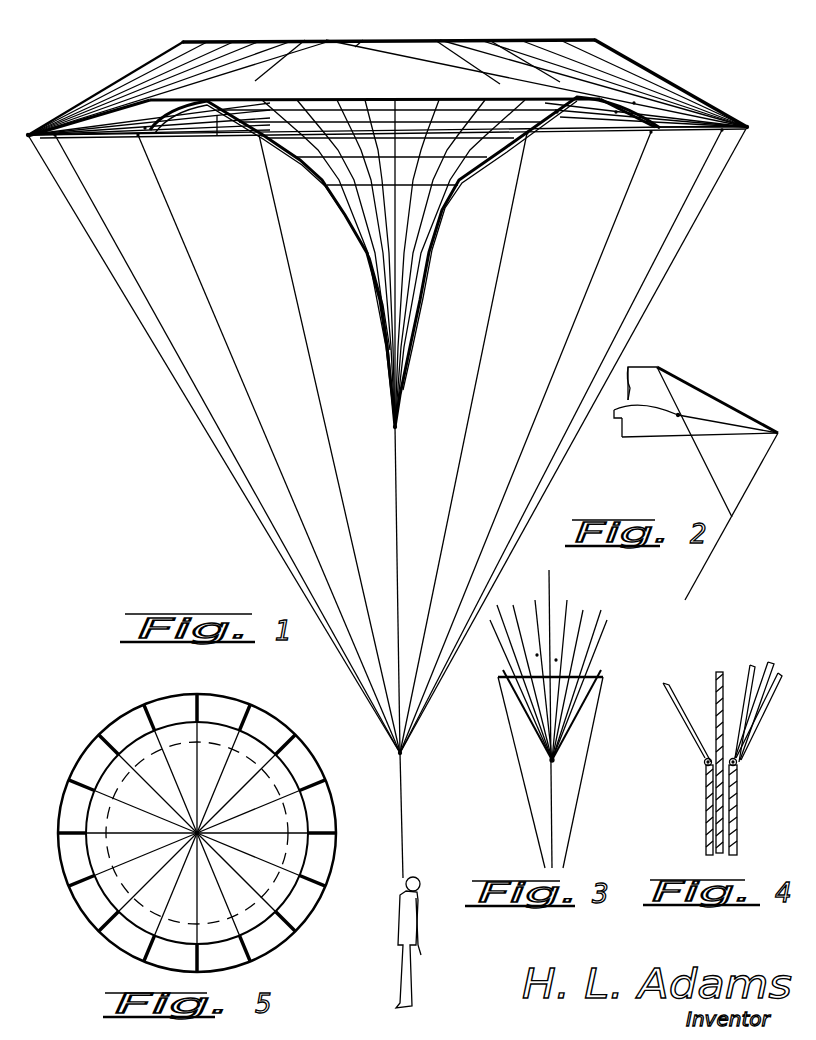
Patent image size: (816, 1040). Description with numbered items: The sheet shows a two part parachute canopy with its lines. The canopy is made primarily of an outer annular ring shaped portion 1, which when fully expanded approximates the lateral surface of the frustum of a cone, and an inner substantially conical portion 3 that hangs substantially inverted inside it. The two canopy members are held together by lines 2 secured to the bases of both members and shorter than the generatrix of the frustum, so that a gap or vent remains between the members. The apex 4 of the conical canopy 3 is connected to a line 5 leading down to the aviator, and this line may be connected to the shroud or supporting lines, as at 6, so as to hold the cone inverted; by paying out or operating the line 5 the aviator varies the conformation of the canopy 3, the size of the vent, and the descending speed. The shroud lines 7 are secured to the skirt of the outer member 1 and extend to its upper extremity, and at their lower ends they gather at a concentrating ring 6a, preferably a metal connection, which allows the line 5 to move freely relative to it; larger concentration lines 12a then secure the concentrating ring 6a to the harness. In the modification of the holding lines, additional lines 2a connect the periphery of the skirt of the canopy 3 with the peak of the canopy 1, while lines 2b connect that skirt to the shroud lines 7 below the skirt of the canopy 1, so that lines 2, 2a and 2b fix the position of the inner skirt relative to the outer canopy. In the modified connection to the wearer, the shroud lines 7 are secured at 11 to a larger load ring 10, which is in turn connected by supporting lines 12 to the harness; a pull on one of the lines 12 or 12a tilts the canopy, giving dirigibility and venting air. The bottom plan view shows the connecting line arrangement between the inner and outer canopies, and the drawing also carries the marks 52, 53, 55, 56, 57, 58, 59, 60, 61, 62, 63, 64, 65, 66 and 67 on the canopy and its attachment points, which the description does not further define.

In FIG. 1, the outer annular ring shaped portion 1 is at (619, 50).
In FIG. 2, the outer annular ring shaped portion 1 is at (715, 396).
In FIG. 5, the outer annular ring shaped portion 1 is at (88, 920).
In FIG. 1, the lines 2 is at (137, 113).
In FIG. 2, the lines 2 is at (728, 419).
In FIG. 5, the lines 2 is at (73, 833).
In FIG. 2, the additional lines 2a is at (686, 404).
In FIG. 2, the additional lines 2b is at (712, 478).
In FIG. 1, the inner substantially conical portion 3 is at (430, 252).
In FIG. 2, the inner substantially conical portion 3 is at (660, 410).
In FIG. 5, the inner substantially conical portion 3 is at (308, 808).
In FIG. 1, the apex 4 is at (397, 427).
In FIG. 1, the line 5 is at (406, 822).
In FIG. 3, the line 5 is at (559, 719).
In FIG. 4, the line 5 is at (716, 694).
In FIG. 1, the connection point 6 is at (409, 755).
In FIG. 3, the connection point 6 is at (550, 725).
In FIG. 4, the concentrating ring 6a is at (738, 763).
In FIG. 1, the shroud lines 7 is at (300, 342).
In FIG. 2, the shroud lines 7 is at (708, 572).
In FIG. 3, the shroud lines 7 is at (604, 640).
In FIG. 4, the shroud lines 7 is at (680, 718).
In FIG. 3, the load ring 10 is at (538, 652).
In FIG. 3, the securing point 11 is at (557, 658).
In FIG. 3, the supporting lines 12 is at (520, 772).
In FIG. 4, the concentration lines 12a is at (706, 815).
In FIG. 1, the cords 52 is at (565, 30).
In FIG. 1, the frame corner attachment 53 is at (28, 138).
In FIG. 1, the shroud attachment point 55 is at (58, 138).
In FIG. 1, the shroud attachment point 56 is at (138, 138).
In FIG. 1, the shroud attachment point 57 is at (218, 118).
In FIG. 1, the shroud attachment point 58 is at (266, 140).
In FIG. 1, the shroud attachment point 59 is at (527, 136).
In FIG. 1, the shroud attachment point 60 is at (557, 114).
In FIG. 1, the shroud attachment point 61 is at (616, 114).
In FIG. 1, the shroud attachment point 62 is at (651, 136).
In FIG. 1, the shroud attachment point 63 is at (723, 133).
In FIG. 1, the frame top corners 64 is at (432, 41).
In FIG. 1, the rib junction 65 is at (145, 128).
In FIG. 1, the rib junction 66 is at (634, 103).
In FIG. 1, the canopy gore seams 67 is at (380, 140).